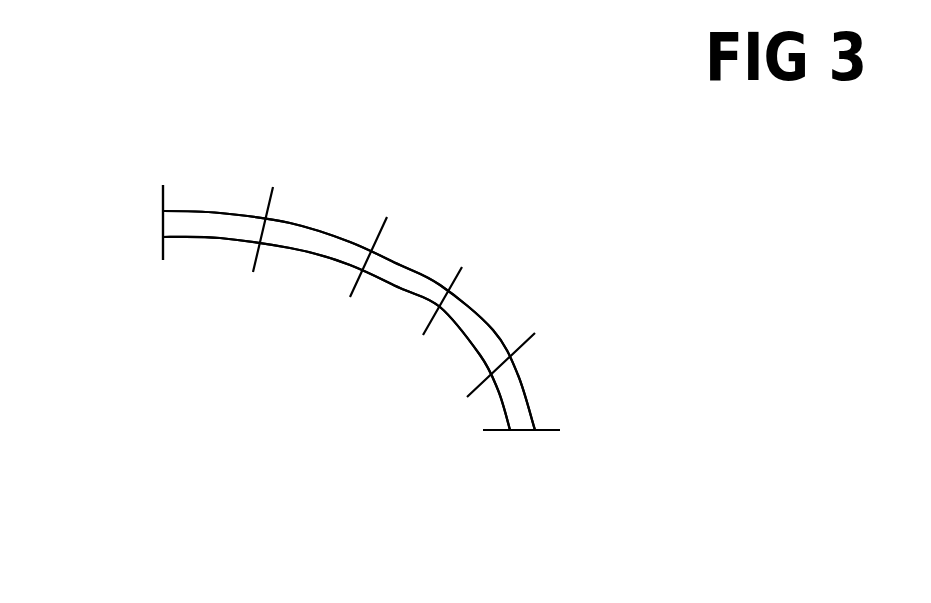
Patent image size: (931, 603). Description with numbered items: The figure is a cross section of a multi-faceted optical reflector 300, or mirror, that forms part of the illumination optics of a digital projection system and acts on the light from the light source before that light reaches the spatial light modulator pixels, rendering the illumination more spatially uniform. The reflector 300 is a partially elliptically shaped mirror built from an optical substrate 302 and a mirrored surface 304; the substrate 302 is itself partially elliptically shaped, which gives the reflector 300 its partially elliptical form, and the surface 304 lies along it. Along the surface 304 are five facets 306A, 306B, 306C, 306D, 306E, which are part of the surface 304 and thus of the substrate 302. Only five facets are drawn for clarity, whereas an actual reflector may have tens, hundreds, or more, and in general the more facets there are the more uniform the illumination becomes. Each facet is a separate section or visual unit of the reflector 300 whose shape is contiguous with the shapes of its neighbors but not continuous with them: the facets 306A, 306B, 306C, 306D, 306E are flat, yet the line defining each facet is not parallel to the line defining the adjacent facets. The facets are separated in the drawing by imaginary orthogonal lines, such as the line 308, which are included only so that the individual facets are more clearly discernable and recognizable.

The multi-faceted optical reflector 300 is at (212, 422).
The optical substrate 302 is at (260, 150).
The mirrored surface 304 is at (183, 237).
The facet 306A is at (213, 248).
The facet 306B is at (313, 262).
The facet 306C is at (398, 295).
The facet 306D is at (460, 340).
The facet 306E is at (497, 408).
The line 308 is at (387, 217).